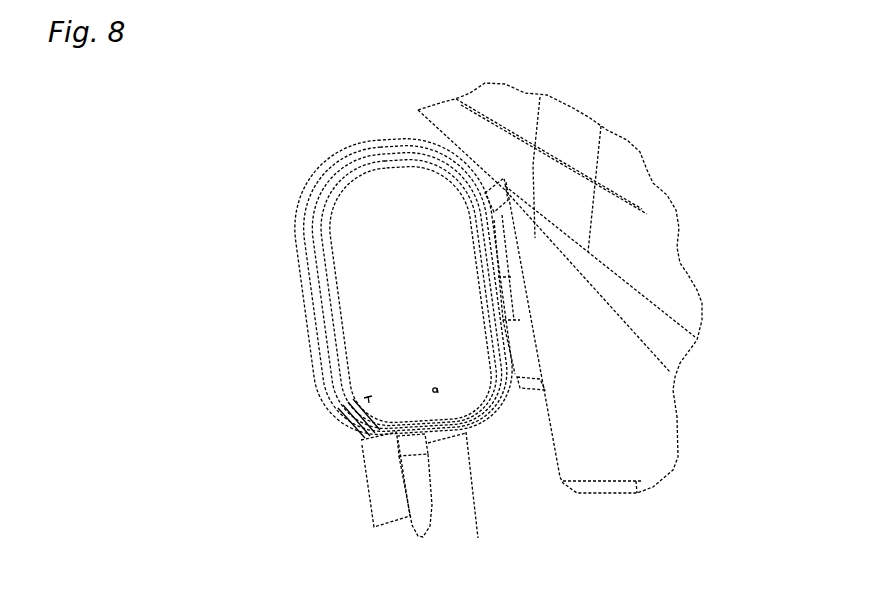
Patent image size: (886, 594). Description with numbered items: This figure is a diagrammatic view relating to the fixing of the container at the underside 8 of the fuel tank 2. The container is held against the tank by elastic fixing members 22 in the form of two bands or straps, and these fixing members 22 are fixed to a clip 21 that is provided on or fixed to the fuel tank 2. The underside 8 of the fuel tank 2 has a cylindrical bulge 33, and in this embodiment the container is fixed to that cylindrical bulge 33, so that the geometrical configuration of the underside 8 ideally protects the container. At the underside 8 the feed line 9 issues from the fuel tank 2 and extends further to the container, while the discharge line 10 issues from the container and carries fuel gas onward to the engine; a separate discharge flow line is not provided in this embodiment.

The fuel tank 2 is at (564, 119).
The clip 21 is at (497, 270).
The elastic fixing members 22 is at (311, 340).
The cylindrical bulge 33 is at (419, 244).
The underside 8 is at (550, 420).
The feed line 9 is at (377, 478).
The discharge line 10 is at (465, 499).